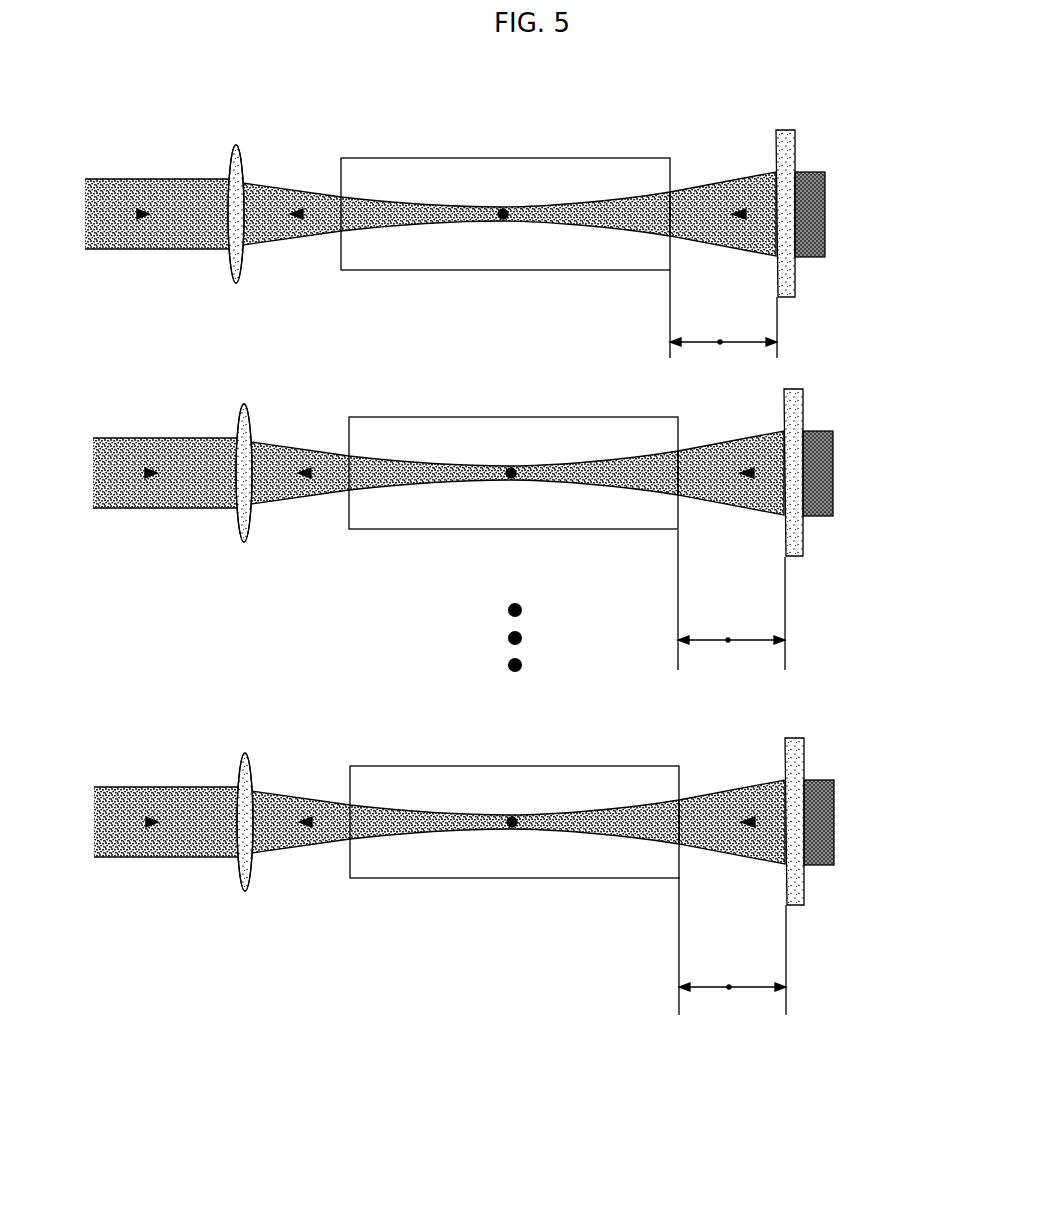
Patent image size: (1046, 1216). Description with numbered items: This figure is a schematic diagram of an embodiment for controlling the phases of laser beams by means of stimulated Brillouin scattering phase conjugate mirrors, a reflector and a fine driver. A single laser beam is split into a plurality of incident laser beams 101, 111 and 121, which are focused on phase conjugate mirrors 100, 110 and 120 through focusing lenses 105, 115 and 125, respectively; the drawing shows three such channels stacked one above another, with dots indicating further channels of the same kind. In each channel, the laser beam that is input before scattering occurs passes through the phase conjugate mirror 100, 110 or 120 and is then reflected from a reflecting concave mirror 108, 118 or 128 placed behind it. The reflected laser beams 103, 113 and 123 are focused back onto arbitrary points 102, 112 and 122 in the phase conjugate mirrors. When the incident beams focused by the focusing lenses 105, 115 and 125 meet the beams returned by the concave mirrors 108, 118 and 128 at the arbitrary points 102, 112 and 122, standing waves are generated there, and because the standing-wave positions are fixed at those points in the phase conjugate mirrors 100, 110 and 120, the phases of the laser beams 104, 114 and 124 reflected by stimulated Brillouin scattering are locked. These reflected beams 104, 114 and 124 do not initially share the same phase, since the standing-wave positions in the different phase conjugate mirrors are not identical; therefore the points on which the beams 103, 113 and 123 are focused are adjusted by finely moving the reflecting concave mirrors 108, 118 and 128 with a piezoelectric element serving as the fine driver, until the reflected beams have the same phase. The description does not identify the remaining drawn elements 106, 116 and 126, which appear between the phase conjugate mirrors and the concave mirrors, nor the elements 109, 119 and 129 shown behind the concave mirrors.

The phase conjugate mirror 100 is at (514, 861).
The incident laser beam 101 is at (169, 845).
The arbitrary point 102 is at (492, 871).
The reflected laser beam 103 is at (732, 852).
The reflected laser beam 104 is at (462, 846).
The focusing lens 105 is at (224, 856).
The distance between crystal and mirror 106 is at (729, 988).
The reflecting concave mirror 108 is at (824, 851).
The transmitted beam 109 is at (862, 843).
The phase conjugate mirror 110 is at (506, 512).
The incident laser beam 111 is at (166, 496).
The arbitrary point 112 is at (490, 523).
The reflected laser beam 113 is at (731, 503).
The reflected laser beam 114 is at (461, 498).
The focusing lens 115 is at (221, 508).
The distance between crystal and mirror 116 is at (728, 641).
The reflecting concave mirror 118 is at (824, 505).
The transmitted beam 119 is at (862, 497).
The phase conjugate mirror 120 is at (504, 255).
The incident laser beam 121 is at (160, 239).
The arbitrary point 122 is at (483, 263).
The reflected laser beam 123 is at (723, 244).
The reflected laser beam 124 is at (453, 240).
The focusing lens 125 is at (215, 250).
The distance between crystal and mirror 126 is at (720, 343).
The reflecting concave mirror 128 is at (816, 246).
The transmitted beam 129 is at (853, 238).